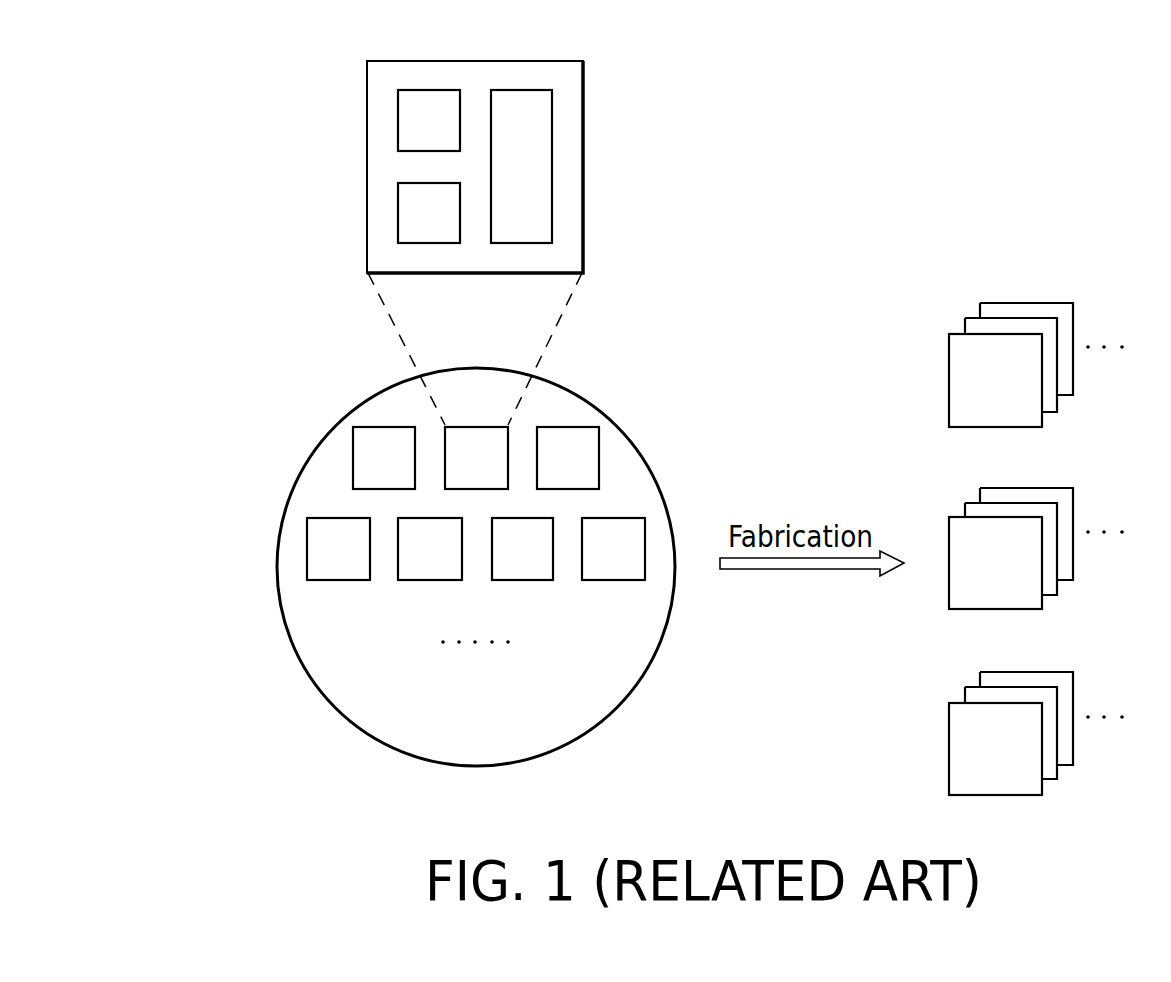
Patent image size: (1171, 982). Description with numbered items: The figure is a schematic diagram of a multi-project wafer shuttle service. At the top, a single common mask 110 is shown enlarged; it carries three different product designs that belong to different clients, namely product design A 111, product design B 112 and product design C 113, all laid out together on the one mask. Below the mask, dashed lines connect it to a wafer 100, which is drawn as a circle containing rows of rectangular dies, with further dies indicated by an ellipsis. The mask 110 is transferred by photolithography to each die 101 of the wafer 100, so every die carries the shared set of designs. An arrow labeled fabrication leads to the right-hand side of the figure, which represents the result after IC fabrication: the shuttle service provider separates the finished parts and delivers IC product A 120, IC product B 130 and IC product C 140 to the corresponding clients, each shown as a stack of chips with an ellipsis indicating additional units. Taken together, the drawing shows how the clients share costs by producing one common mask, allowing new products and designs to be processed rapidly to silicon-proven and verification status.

The wafer 100 is at (277, 562).
The die 101 is at (475, 427).
The mask 110 is at (523, 57).
The product design A 111 is at (398, 118).
The product design B 112 is at (398, 210).
The product design C 113 is at (552, 165).
The IC product A 120 is at (1042, 302).
The IC product B 130 is at (1042, 487).
The IC product C 140 is at (1042, 671).